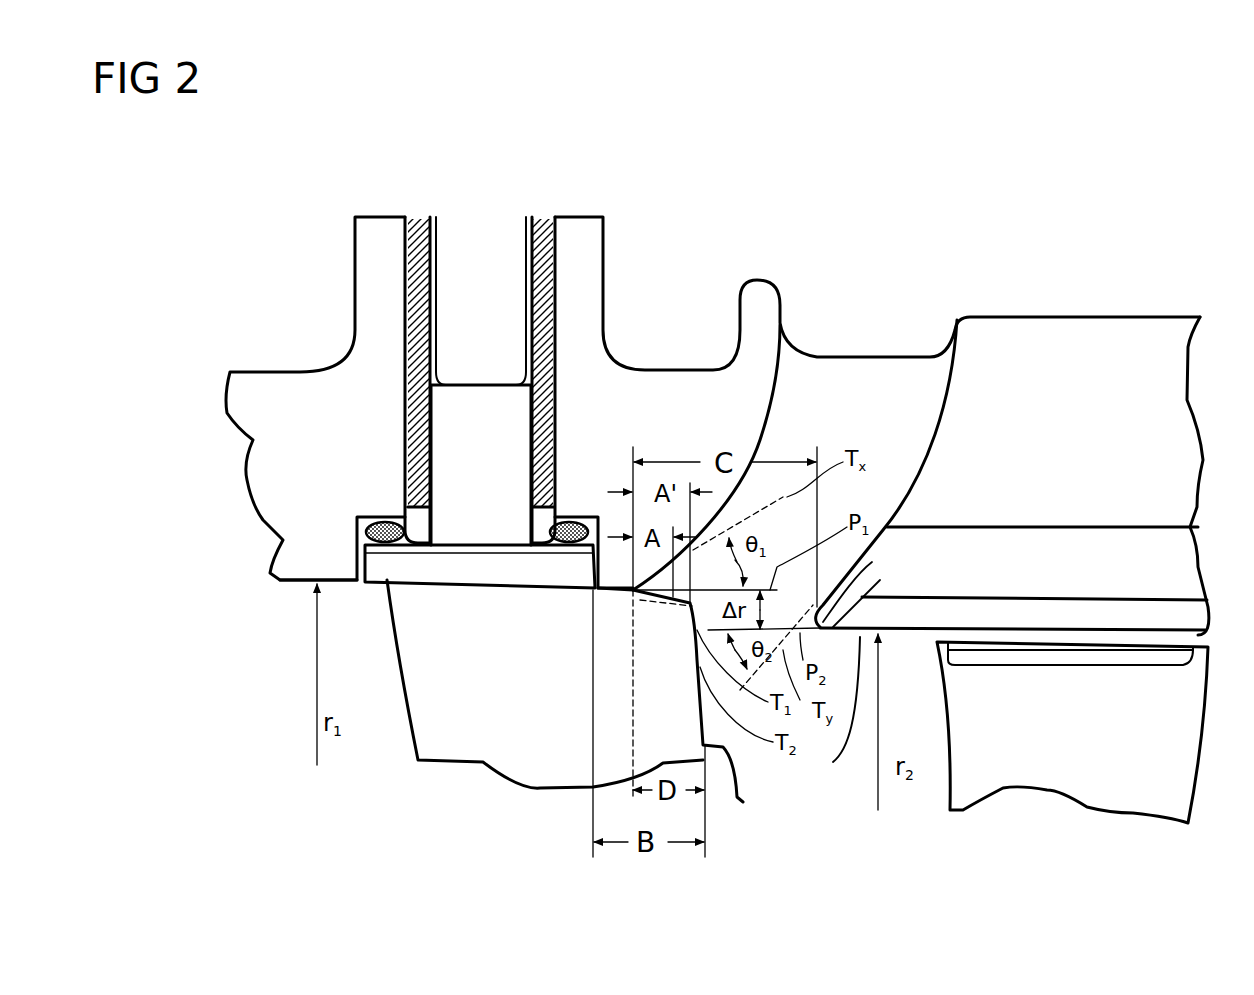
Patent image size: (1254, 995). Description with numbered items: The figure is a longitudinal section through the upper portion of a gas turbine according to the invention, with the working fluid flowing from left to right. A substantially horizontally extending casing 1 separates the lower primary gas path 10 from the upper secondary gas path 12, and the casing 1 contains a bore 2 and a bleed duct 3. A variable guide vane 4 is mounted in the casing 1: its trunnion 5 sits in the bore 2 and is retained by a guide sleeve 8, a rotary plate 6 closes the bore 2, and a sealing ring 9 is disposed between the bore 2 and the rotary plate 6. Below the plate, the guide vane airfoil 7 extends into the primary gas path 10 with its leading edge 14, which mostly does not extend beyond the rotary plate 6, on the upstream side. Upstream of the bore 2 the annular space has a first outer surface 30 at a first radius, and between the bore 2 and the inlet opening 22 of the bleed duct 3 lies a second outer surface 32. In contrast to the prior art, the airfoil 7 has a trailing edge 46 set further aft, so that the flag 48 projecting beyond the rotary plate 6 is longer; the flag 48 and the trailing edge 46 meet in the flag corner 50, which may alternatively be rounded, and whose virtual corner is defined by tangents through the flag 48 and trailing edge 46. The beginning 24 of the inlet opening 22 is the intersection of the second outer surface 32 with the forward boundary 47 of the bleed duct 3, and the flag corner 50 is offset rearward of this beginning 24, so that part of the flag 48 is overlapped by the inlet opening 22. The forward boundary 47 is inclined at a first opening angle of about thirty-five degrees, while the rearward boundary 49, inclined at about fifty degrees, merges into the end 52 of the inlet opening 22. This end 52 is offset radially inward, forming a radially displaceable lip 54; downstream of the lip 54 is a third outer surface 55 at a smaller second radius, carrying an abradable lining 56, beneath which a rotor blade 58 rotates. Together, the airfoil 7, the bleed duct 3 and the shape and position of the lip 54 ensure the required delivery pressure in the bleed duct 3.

The casing 1 is at (740, 162).
The bore 2 is at (413, 533).
The bleed duct 3 is at (795, 473).
The variable guide vane 4 is at (495, 208).
The trunnion 5 is at (481, 381).
The rotary plate 6 is at (430, 567).
The guide vane airfoil 7 is at (430, 645).
The guide sleeve 8 is at (547, 227).
The sealing ring 9 is at (378, 540).
The primary gas path 10 is at (268, 583).
The secondary gas path 12 is at (257, 370).
The leading edge 14 is at (413, 742).
The inlet opening 22 is at (787, 537).
The beginning of inlet opening 24 is at (632, 593).
The first outer surface 30 is at (297, 577).
The second outer surface 32 is at (627, 590).
The trailing edge 46 is at (743, 802).
The forward boundary 47 is at (773, 414).
The flag 48 is at (620, 598).
The rearward boundary 49 is at (945, 413).
The flag corner 50 is at (700, 597).
The end of inlet opening 52 is at (872, 562).
The lip 54 is at (880, 580).
The third outer surface 55 is at (833, 762).
The abradable lining 56 is at (957, 614).
The rotor blade 58 is at (1072, 732).